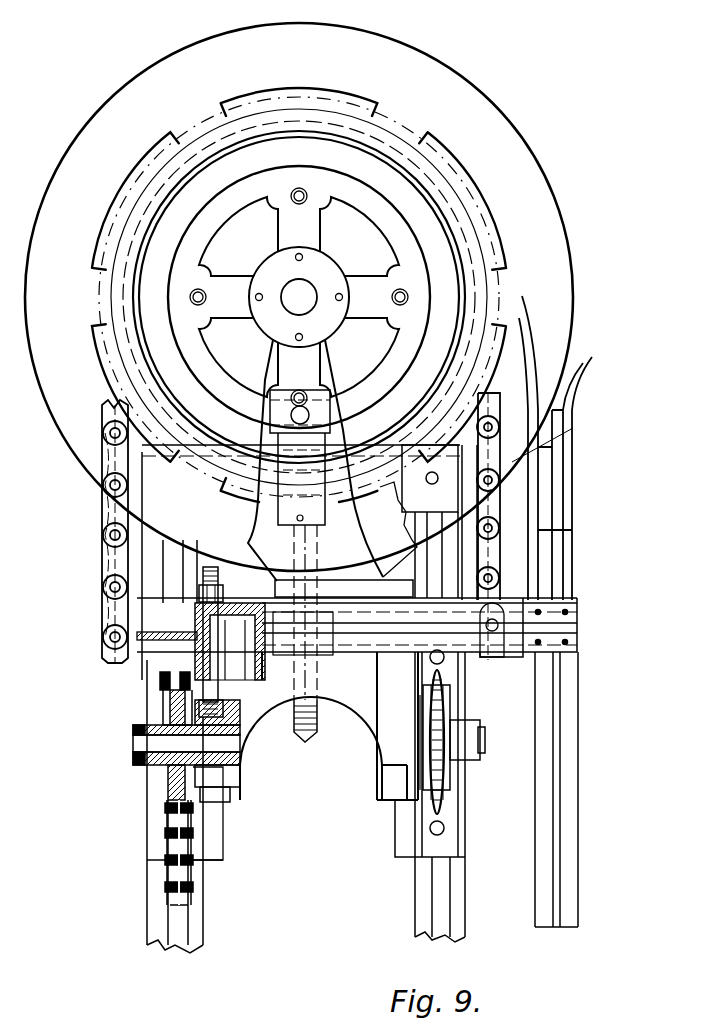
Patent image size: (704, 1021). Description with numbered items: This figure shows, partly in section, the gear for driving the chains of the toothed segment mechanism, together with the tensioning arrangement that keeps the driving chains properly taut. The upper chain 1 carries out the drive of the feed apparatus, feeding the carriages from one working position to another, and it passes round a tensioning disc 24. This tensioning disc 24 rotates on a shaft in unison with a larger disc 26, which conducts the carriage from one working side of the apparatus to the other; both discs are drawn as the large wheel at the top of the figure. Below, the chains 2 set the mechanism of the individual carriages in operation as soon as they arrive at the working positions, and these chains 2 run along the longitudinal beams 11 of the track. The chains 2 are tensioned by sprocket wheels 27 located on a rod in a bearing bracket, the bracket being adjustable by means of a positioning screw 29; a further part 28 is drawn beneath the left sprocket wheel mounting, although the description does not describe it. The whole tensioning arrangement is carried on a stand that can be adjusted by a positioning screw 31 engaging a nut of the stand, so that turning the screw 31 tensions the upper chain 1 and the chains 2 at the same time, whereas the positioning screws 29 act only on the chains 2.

The chain 1 is at (113, 612).
The chains 2 is at (165, 885).
The longitudinal beams 11 is at (456, 910).
The tensioning disc 24 is at (390, 238).
The disc 26 is at (437, 85).
The sprocket wheels 27 is at (175, 710).
The block 28 is at (228, 778).
The positioning screw 29 is at (213, 675).
The positioning screw 31 is at (316, 736).